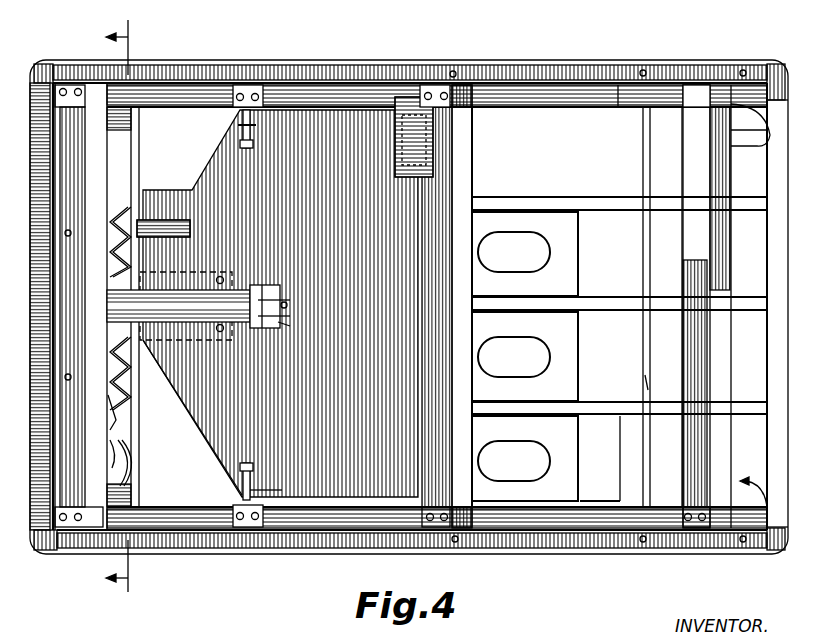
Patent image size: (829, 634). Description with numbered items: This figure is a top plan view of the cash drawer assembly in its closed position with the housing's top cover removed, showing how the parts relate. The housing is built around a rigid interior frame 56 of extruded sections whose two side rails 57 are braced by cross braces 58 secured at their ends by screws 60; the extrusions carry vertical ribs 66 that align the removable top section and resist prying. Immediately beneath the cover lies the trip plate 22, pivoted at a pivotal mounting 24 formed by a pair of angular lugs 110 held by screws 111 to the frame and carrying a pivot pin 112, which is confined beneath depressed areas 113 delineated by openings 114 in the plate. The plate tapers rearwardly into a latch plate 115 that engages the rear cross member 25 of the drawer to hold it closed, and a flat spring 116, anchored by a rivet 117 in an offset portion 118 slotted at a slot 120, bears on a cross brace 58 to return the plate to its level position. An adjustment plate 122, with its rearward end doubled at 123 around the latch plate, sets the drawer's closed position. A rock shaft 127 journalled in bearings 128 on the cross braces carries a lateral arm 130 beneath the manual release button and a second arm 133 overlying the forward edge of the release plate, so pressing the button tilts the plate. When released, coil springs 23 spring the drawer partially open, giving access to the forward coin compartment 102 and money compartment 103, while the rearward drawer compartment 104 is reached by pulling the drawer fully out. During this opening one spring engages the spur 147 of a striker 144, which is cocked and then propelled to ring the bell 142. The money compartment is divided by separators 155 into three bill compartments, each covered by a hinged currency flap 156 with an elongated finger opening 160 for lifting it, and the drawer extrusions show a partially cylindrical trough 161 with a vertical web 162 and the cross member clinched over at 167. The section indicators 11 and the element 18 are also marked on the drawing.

The section line 11- 11 is at (139, 313).
The rail member 18 is at (603, 484).
The trip plate 22 is at (363, 132).
The coil springs 23 is at (118, 212).
The pivotal mounting 24 is at (243, 128).
The rear cross member 25 is at (139, 158).
The interior frame 56 is at (547, 88).
The side rails 57 is at (500, 88).
The cross braces 58 is at (465, 330).
The screws 60 is at (78, 88).
The vertical ribs 66 is at (360, 66).
The coin compartment 102 is at (770, 552).
The money compartment 103 is at (628, 478).
The rearward drawer compartment 104 is at (186, 115).
The angular lugs 110 is at (241, 92).
The screws 111 is at (262, 95).
The pivot pin 112 is at (272, 500).
The depressed areas 113 is at (250, 125).
The openings 114 is at (255, 142).
The latch plate 115 is at (200, 418).
The flat spring 116 is at (178, 306).
The rivet 117 is at (286, 305).
The offset portion 118 is at (280, 327).
The slot 120 is at (250, 332).
The adjustment plate 122 is at (170, 340).
The doubled rearward end 123 is at (155, 262).
The rock shaft 127 is at (618, 102).
The bearings 128 is at (436, 100).
The lateral arm 130 is at (756, 135).
The second arm 133 is at (403, 153).
The bell 142 is at (130, 470).
The striker 144 is at (115, 460).
The spur 147 is at (108, 402).
The separators 155 is at (603, 203).
The hinged currency flap 156 is at (514, 211).
The finger opening 160 is at (527, 270).
The partially cylindrical trough 161 is at (666, 143).
The vertical web 162 is at (645, 381).
The clinched portion 167 is at (780, 98).